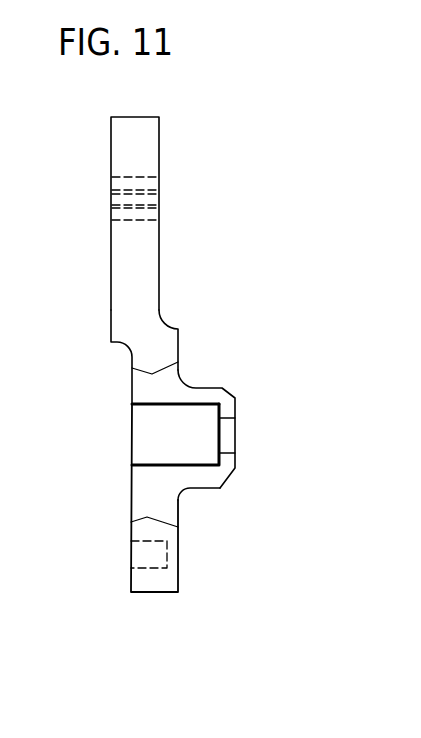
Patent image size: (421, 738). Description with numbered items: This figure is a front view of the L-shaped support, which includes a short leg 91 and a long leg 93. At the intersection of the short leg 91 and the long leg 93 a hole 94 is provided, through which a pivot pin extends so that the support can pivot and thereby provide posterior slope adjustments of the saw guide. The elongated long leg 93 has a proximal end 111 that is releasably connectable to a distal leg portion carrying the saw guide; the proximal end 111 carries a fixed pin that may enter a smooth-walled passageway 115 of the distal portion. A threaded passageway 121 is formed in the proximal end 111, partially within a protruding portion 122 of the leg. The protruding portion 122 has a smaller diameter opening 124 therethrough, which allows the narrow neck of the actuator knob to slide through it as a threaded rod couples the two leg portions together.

The short leg 91 is at (150, 152).
The hole 94 is at (152, 200).
The long leg 93 is at (150, 302).
The threaded passageway 121 is at (173, 407).
The smaller diameter opening 124 is at (228, 453).
The protruding portion 122 is at (207, 480).
The proximal end 111 is at (167, 513).
The passageway 115 is at (140, 543).